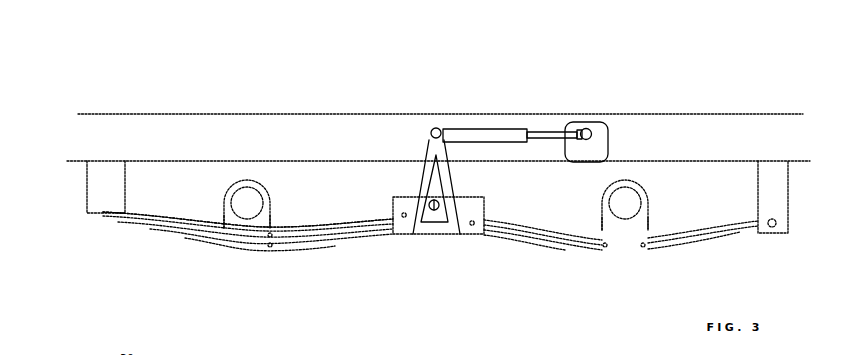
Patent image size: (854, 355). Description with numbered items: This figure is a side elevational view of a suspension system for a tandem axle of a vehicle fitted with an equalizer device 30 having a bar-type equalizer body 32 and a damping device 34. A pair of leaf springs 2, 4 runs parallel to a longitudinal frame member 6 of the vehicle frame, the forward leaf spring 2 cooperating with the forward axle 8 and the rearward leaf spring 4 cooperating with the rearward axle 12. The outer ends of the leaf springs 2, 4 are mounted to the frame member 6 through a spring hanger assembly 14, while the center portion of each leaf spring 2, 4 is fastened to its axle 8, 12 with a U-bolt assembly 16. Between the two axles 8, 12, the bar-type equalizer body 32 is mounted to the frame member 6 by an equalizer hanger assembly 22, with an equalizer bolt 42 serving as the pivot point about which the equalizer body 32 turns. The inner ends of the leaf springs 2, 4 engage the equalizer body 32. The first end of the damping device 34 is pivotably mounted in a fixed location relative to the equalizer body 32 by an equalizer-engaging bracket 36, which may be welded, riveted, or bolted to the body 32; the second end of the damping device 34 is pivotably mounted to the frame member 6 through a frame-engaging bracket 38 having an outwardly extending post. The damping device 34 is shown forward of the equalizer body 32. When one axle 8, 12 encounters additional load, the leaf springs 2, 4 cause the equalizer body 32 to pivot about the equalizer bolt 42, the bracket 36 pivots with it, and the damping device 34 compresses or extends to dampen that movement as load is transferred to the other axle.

The forward leaf spring 2 is at (560, 236).
The rearward leaf spring 4 is at (168, 235).
The frame member 6 is at (648, 122).
The forward axle 8 is at (633, 200).
The rearward axle 12 is at (250, 190).
The spring hanger assembly 14 is at (97, 192).
The U-bolt assembly 16 is at (228, 218).
The equalizer hanger assembly 22 is at (420, 155).
The equalizer device 30 is at (501, 76).
The bar-type equalizer body 32 is at (398, 233).
The damping device 34 is at (467, 128).
The equalizer-engaging bracket 36 is at (440, 224).
The frame-engaging bracket 38 is at (600, 121).
The equalizer bolt 42 is at (433, 212).